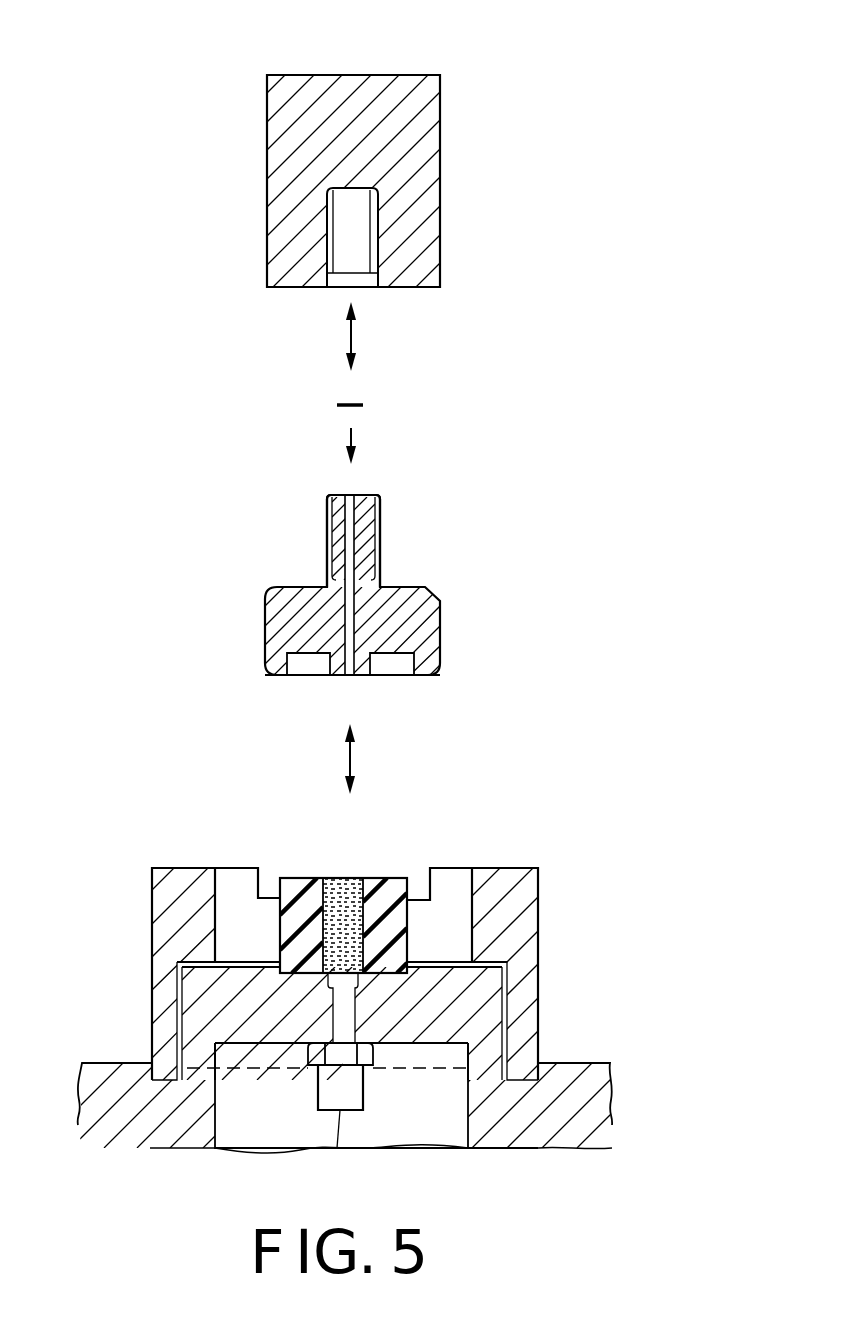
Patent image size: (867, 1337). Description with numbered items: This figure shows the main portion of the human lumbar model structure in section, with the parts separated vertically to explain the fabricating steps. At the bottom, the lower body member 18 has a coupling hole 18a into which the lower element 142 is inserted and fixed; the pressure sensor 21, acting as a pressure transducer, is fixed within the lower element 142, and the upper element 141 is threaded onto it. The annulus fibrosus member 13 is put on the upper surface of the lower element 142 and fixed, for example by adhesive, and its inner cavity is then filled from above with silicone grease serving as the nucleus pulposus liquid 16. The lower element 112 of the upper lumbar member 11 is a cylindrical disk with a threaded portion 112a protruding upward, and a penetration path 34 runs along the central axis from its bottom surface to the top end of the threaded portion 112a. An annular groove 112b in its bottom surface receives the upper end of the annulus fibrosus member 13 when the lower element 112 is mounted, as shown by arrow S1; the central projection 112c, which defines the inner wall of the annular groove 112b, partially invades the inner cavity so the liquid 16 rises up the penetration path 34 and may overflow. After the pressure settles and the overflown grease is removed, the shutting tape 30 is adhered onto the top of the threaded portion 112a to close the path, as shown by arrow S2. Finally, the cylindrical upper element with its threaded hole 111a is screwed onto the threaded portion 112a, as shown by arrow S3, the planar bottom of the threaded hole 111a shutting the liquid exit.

The upper lumbar member 11 is at (455, 90).
The threaded hole 111a is at (370, 226).
The arrow S3 is at (351, 335).
The shutting tape 30 is at (350, 405).
The arrow S2 is at (351, 432).
The lower element 112 is at (450, 620).
The threaded portion 112a is at (380, 527).
The penetration path 34 is at (343, 624).
The annular groove 112b is at (397, 667).
The central projection 112c is at (333, 677).
The arrow S1 is at (350, 755).
The nucleus pulposus liquid 16 is at (347, 878).
The upper element 141 is at (540, 893).
The annulus fibrosus member 13 is at (407, 932).
The lower element 142 is at (505, 1007).
The lower body member 18 is at (585, 1063).
The coupling hole 18a is at (523, 1125).
The pressure sensor 21 is at (363, 1085).